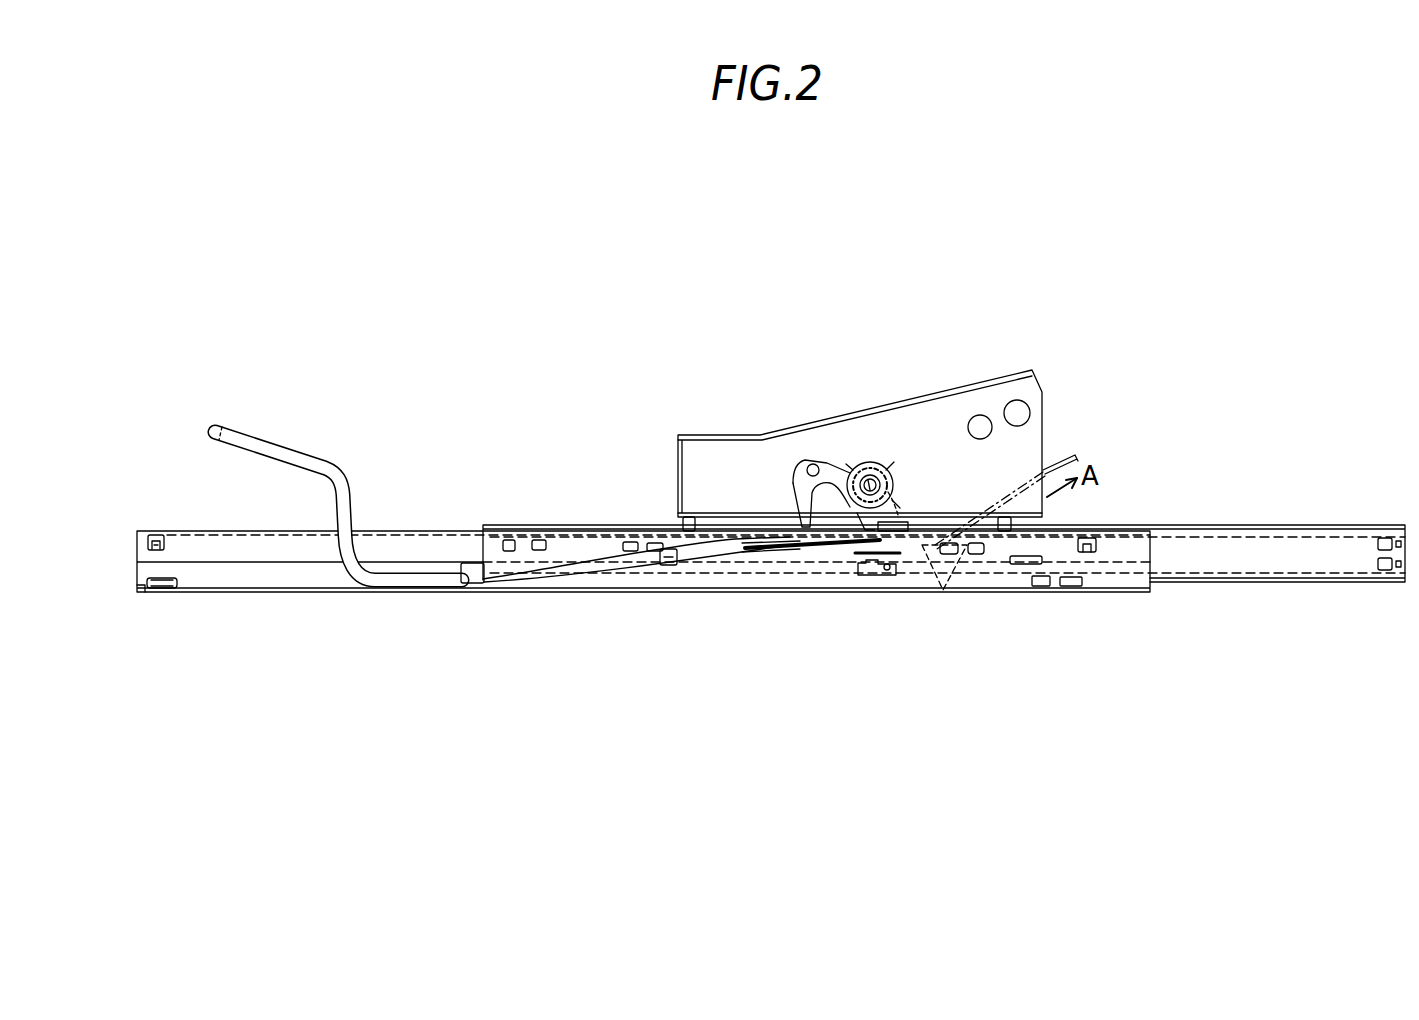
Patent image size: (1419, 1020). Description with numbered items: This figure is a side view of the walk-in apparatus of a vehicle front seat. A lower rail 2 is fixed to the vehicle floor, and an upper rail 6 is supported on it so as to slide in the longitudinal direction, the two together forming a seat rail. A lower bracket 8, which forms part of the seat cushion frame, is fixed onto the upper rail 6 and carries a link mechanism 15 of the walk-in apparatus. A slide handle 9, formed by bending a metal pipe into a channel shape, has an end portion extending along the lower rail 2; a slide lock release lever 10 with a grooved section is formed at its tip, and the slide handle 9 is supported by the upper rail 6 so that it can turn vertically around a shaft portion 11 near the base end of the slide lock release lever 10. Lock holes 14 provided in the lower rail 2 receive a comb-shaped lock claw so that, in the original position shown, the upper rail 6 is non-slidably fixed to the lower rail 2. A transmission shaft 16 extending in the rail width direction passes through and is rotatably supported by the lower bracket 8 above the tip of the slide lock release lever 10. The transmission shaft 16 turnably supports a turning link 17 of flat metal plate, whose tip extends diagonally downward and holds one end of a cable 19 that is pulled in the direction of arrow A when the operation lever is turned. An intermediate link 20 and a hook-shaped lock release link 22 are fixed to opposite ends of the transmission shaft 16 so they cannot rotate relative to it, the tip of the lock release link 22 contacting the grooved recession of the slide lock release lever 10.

The lower rail 2 is at (254, 593).
The upper rail 6 is at (514, 524).
The lower bracket 8 is at (806, 437).
The slide handle 9 is at (277, 437).
The slide lock release lever 10 is at (781, 552).
The shaft portion 11 is at (667, 567).
The lock holes 14 is at (943, 590).
The link mechanism 15 is at (887, 453).
The transmission shaft 16 is at (868, 462).
The turning link 17 is at (868, 576).
The cable 19 is at (1063, 452).
The intermediate link 20 is at (903, 493).
The lock release link 22 is at (792, 484).